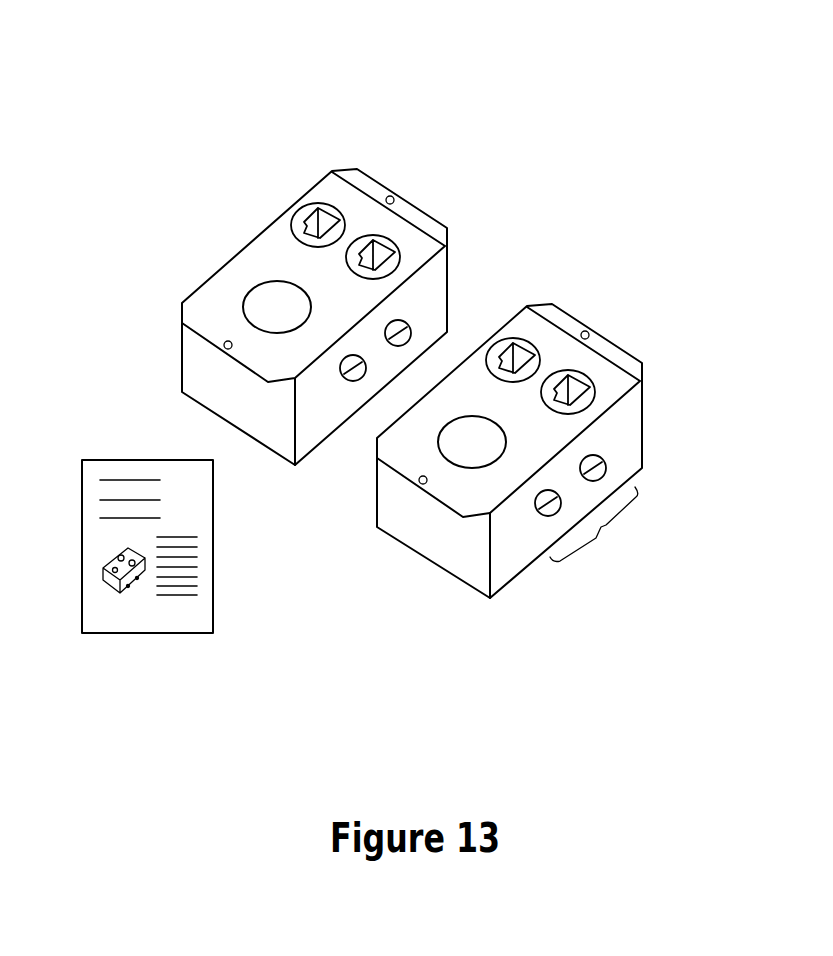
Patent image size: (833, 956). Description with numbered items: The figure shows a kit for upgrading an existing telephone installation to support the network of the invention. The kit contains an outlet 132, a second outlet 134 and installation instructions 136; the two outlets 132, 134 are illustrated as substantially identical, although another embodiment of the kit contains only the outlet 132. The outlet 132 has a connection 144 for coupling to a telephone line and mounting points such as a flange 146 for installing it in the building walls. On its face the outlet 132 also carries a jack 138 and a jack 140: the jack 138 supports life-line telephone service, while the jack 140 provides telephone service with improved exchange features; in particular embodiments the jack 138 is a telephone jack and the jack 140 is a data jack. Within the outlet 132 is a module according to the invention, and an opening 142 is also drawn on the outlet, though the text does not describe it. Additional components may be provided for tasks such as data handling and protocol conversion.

The outlet 132 is at (596, 455).
The outlet 134 is at (488, 173).
The installation instructions 136 is at (200, 562).
The jack 138 is at (590, 395).
The jack 140 is at (523, 345).
The circular opening 142 is at (495, 467).
The connection 144 is at (601, 527).
The flange 146 is at (442, 503).